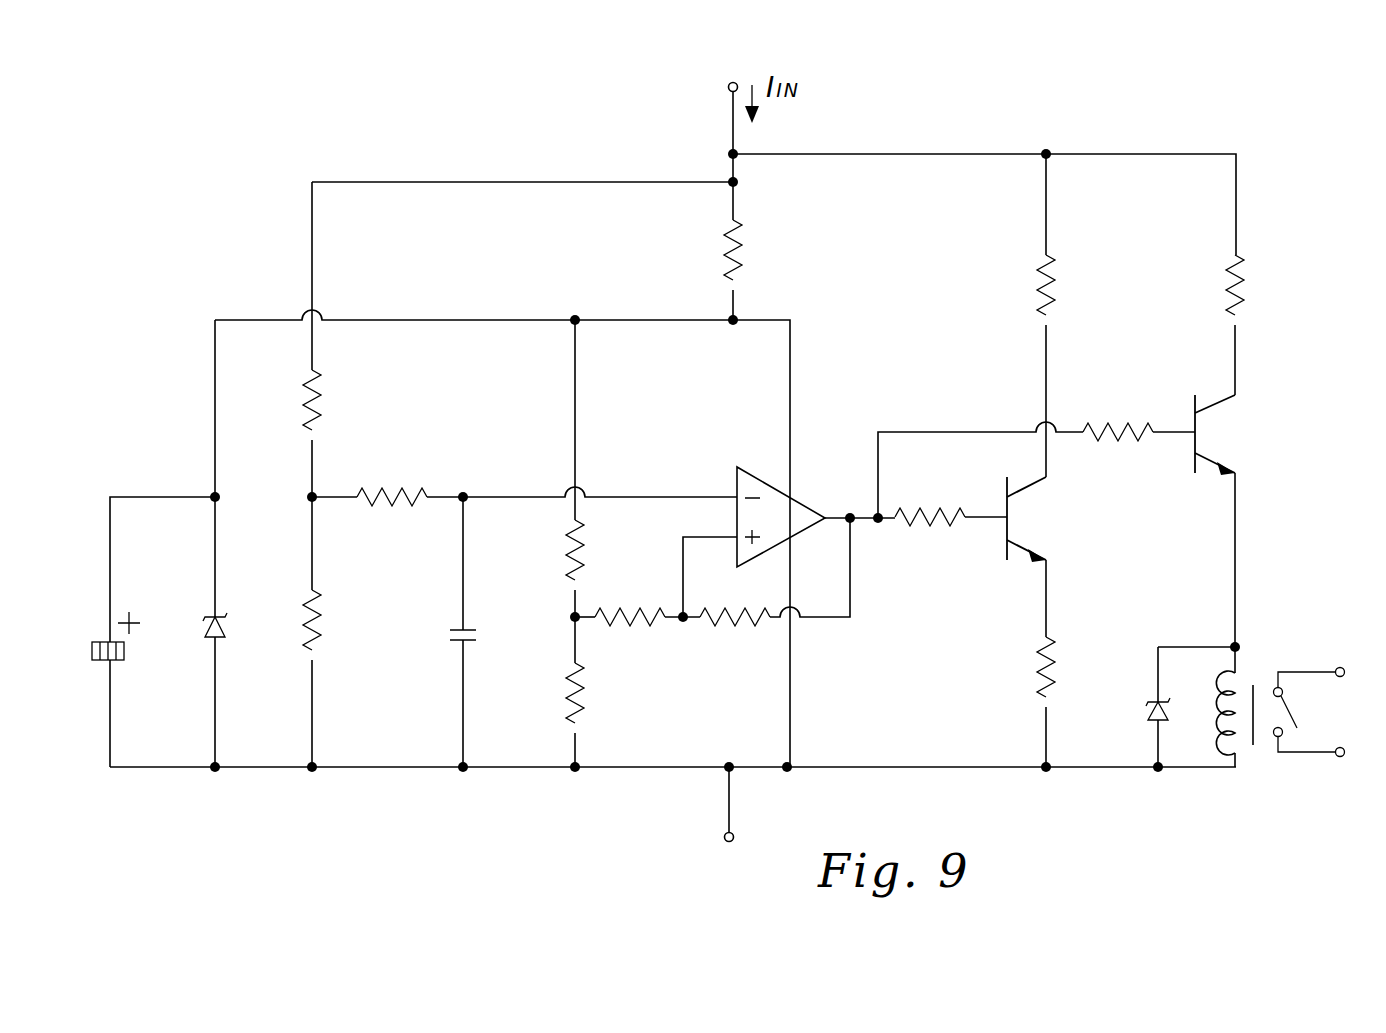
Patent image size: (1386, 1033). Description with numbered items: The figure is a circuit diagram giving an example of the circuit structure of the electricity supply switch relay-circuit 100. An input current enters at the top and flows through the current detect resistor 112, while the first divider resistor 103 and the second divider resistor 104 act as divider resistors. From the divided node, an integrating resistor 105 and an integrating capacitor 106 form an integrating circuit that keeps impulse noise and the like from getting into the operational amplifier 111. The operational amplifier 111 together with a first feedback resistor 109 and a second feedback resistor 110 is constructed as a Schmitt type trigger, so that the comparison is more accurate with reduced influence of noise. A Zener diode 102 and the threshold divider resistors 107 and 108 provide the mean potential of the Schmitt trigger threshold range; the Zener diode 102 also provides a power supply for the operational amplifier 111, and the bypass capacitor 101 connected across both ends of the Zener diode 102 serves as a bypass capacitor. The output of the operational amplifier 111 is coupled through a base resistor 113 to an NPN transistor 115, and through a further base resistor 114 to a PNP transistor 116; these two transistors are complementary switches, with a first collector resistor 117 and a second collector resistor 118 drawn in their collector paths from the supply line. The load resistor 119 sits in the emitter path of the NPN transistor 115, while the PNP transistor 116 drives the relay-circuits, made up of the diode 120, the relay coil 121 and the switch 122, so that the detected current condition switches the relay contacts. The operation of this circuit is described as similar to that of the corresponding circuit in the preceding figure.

The electricity supply switch relay-circuit 100 is at (1083, 93).
The capacitor 101 is at (125, 648).
The Zener diode 102 is at (222, 630).
The resistor 103 is at (318, 413).
The resistor 104 is at (318, 651).
The resistor 105 is at (415, 503).
The capacitor 106 is at (468, 645).
The divider resistor 107 is at (566, 570).
The divider resistor 108 is at (582, 722).
The resistor 109 is at (668, 645).
The resistor 110 is at (771, 645).
The operational amplifier 111 is at (764, 478).
The resistor 112 is at (740, 280).
The resistor 113 is at (905, 523).
The resistor 114 is at (1093, 438).
The NPN transistor 115 is at (1068, 530).
The PNP transistor 116 is at (1215, 421).
The resistor 117 is at (1052, 316).
The resistor 118 is at (1241, 316).
The resistor 119 is at (1037, 688).
The relay-circuit 120 is at (1148, 712).
The relay-circuit 121 is at (1232, 738).
The relay-circuit 122 is at (1292, 717).